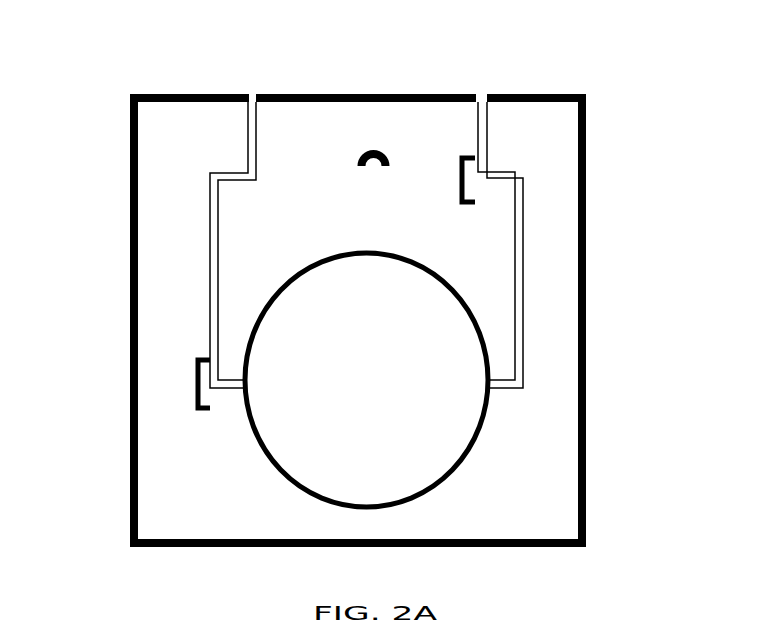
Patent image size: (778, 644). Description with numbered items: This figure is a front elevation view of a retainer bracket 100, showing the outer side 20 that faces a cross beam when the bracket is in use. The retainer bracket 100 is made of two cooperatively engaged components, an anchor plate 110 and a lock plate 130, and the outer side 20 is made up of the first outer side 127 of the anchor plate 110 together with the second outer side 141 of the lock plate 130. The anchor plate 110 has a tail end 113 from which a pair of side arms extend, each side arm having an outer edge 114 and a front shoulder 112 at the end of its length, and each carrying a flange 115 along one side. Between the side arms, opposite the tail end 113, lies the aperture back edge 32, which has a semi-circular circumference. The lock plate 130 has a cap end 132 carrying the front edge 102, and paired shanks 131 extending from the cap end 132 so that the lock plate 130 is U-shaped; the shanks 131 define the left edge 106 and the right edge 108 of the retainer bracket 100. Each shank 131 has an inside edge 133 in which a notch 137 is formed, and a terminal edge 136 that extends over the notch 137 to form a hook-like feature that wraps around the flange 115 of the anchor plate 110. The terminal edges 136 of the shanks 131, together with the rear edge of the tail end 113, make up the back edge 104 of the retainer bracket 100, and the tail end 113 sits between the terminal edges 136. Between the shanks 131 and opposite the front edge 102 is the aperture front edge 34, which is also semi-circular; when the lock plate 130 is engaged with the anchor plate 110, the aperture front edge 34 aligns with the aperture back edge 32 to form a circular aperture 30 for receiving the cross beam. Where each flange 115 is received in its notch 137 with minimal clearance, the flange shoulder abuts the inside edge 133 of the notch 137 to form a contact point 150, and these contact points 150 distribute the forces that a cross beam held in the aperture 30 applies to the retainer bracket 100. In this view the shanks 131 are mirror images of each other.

The retainer bracket 100 is at (95, 92).
The front edge 102 is at (482, 548).
The back edge 104 is at (465, 90).
The left edge 106 is at (128, 325).
The right edge 108 is at (587, 216).
The anchor plate 110 is at (360, 132).
The front shoulder 112 is at (503, 378).
The tail end 113 is at (284, 135).
The outer edge 114 is at (480, 125).
The flange 115 is at (218, 263).
The first outer side 127 is at (485, 245).
The lock plate 130 is at (212, 130).
The shank 131 is at (183, 210).
The cap end 132 is at (248, 525).
The inside edge 133 is at (220, 228).
The terminal edge 136 is at (216, 96).
The notch 137 is at (210, 302).
The second outer side 141 is at (392, 127).
The contact point 150 is at (198, 384).
The outer side 20 is at (168, 438).
The aperture 30 is at (258, 442).
The aperture back edge 32 is at (417, 272).
The aperture front edge 34 is at (333, 500).